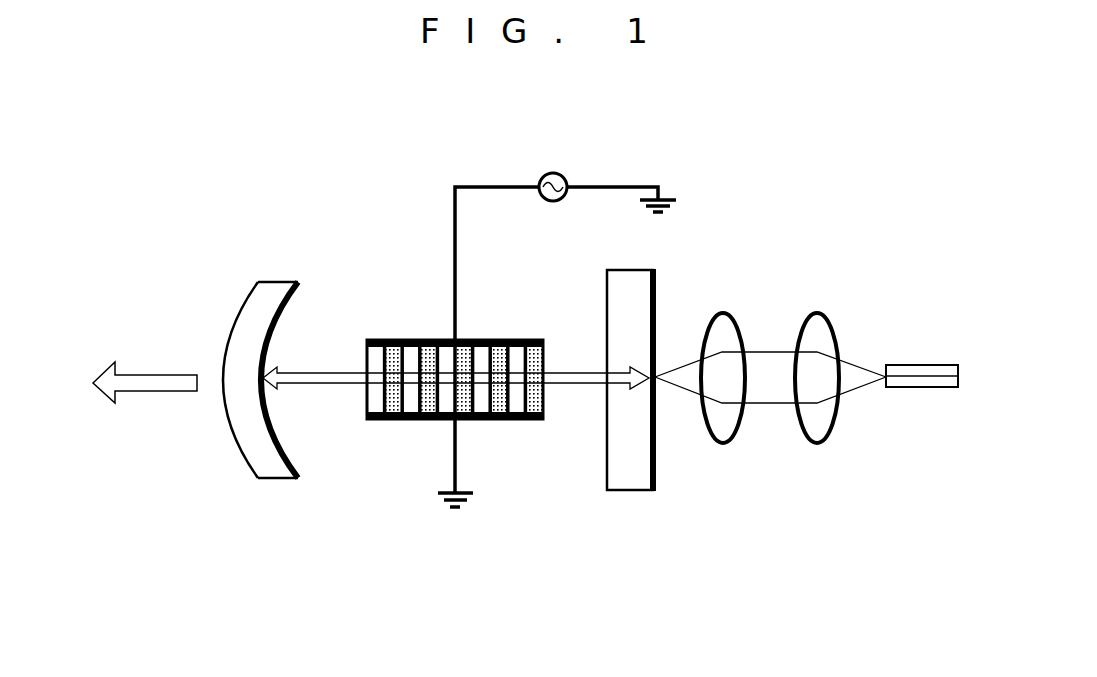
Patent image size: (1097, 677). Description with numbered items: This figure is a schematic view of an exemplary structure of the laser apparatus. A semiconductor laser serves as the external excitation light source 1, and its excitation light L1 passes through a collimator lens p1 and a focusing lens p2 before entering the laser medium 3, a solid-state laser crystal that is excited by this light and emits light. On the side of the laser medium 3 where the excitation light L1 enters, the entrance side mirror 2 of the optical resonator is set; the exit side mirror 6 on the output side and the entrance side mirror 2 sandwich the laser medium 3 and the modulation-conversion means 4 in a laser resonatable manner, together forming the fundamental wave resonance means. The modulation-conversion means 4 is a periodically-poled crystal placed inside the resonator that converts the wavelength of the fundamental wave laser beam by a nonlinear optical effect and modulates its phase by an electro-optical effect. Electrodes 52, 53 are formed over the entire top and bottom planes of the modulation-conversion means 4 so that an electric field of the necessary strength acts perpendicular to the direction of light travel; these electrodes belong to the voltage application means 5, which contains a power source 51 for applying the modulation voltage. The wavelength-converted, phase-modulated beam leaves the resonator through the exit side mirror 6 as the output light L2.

The external excitation light source 1 is at (922, 414).
The entrance side mirror 2 is at (660, 400).
The laser medium 3 is at (664, 348).
The modulation-conversion means 4 is at (443, 424).
The voltage application means 5 is at (521, 314).
The power source 51 is at (586, 161).
The electrode 52 is at (455, 299).
The electrode 53 is at (456, 462).
The exit side mirror 6 is at (238, 354).
The excitation light L1 is at (770, 326).
The output light L2 is at (145, 416).
The collimator lens p1 is at (844, 420).
The focusing lens p2 is at (752, 420).